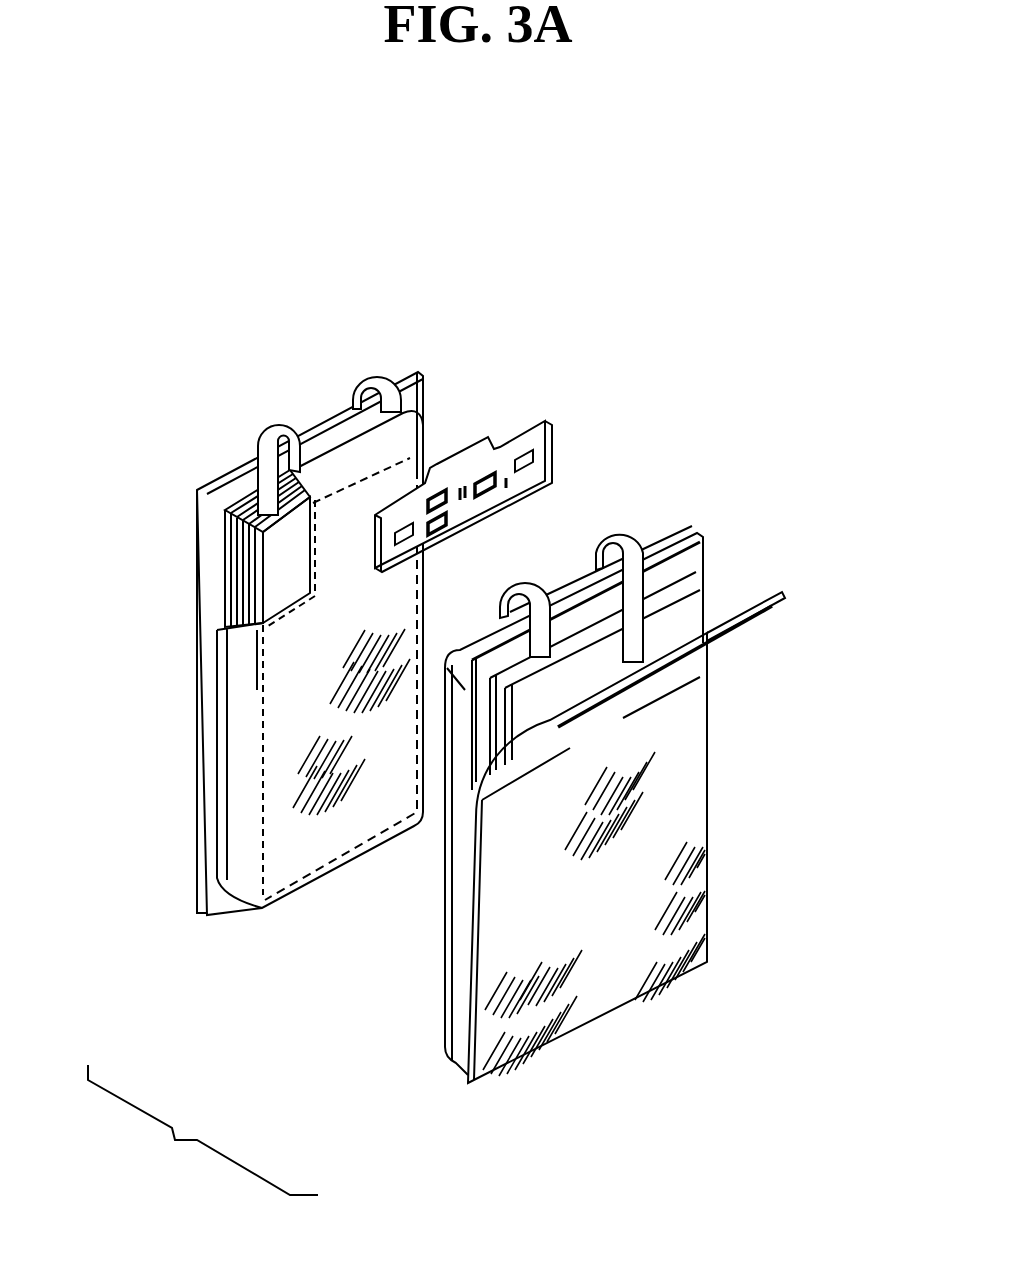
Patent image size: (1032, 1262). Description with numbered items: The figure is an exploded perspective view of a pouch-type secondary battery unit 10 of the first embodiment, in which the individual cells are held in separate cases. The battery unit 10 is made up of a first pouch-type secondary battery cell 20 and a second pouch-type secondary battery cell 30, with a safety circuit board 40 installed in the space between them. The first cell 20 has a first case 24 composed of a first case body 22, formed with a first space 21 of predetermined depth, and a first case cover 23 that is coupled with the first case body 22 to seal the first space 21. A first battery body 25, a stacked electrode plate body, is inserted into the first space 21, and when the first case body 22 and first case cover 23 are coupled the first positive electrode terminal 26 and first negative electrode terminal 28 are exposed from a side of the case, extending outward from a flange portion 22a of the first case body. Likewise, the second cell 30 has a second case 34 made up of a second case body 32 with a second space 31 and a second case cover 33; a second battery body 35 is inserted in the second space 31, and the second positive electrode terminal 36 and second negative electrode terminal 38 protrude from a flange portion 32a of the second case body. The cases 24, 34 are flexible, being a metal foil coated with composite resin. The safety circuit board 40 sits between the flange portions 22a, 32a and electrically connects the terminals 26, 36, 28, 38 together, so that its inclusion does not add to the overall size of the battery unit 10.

The battery unit 10 is at (206, 292).
The first pouch-type secondary battery cell 20 is at (225, 665).
The first space 21 is at (227, 585).
The first case body 22 is at (240, 665).
The flange portion of the first case body 22a is at (330, 428).
The first case cover 23 is at (197, 597).
The first case 24 is at (225, 646).
The first battery body 25 is at (218, 507).
The first positive electrode terminal 26 is at (272, 430).
The first negative electrode terminal 28 is at (384, 378).
The second pouch-type secondary battery cell 30 is at (618, 816).
The second space 31 is at (690, 535).
The second case body 32 is at (705, 578).
The flange portion of the second case body 32a is at (583, 612).
The second case cover 33 is at (782, 593).
The second case 34 is at (634, 810).
The second battery body 35 is at (658, 645).
The second positive electrode terminal 36 is at (524, 578).
The second negative electrode terminal 38 is at (633, 528).
The safety circuit board 40 is at (549, 410).